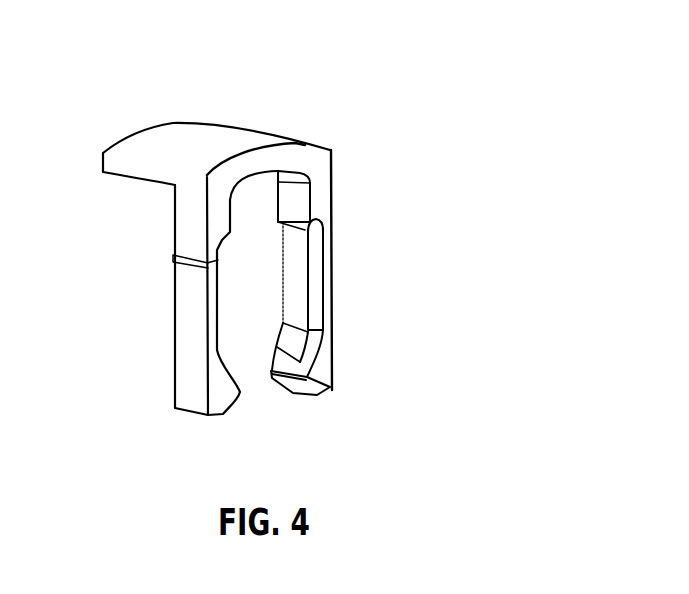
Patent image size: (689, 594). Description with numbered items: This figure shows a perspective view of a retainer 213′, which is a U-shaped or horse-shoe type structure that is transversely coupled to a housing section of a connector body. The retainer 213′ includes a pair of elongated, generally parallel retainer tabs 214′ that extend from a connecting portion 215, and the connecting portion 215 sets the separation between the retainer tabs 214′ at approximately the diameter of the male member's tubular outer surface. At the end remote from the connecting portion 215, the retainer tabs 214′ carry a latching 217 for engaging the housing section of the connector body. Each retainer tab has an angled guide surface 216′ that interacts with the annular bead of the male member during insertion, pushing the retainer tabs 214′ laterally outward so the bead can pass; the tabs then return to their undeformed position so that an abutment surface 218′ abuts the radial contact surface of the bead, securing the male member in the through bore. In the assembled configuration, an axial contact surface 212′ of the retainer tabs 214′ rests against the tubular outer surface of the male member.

The connecting portion 215 is at (160, 127).
The retainer 213′ is at (357, 98).
The retainer tabs 214′ is at (337, 340).
The abutment surface 218′ is at (173, 283).
The axial contact surface 212′ is at (295, 270).
The angled guide surface 216′ is at (313, 302).
The latching 217 is at (332, 388).